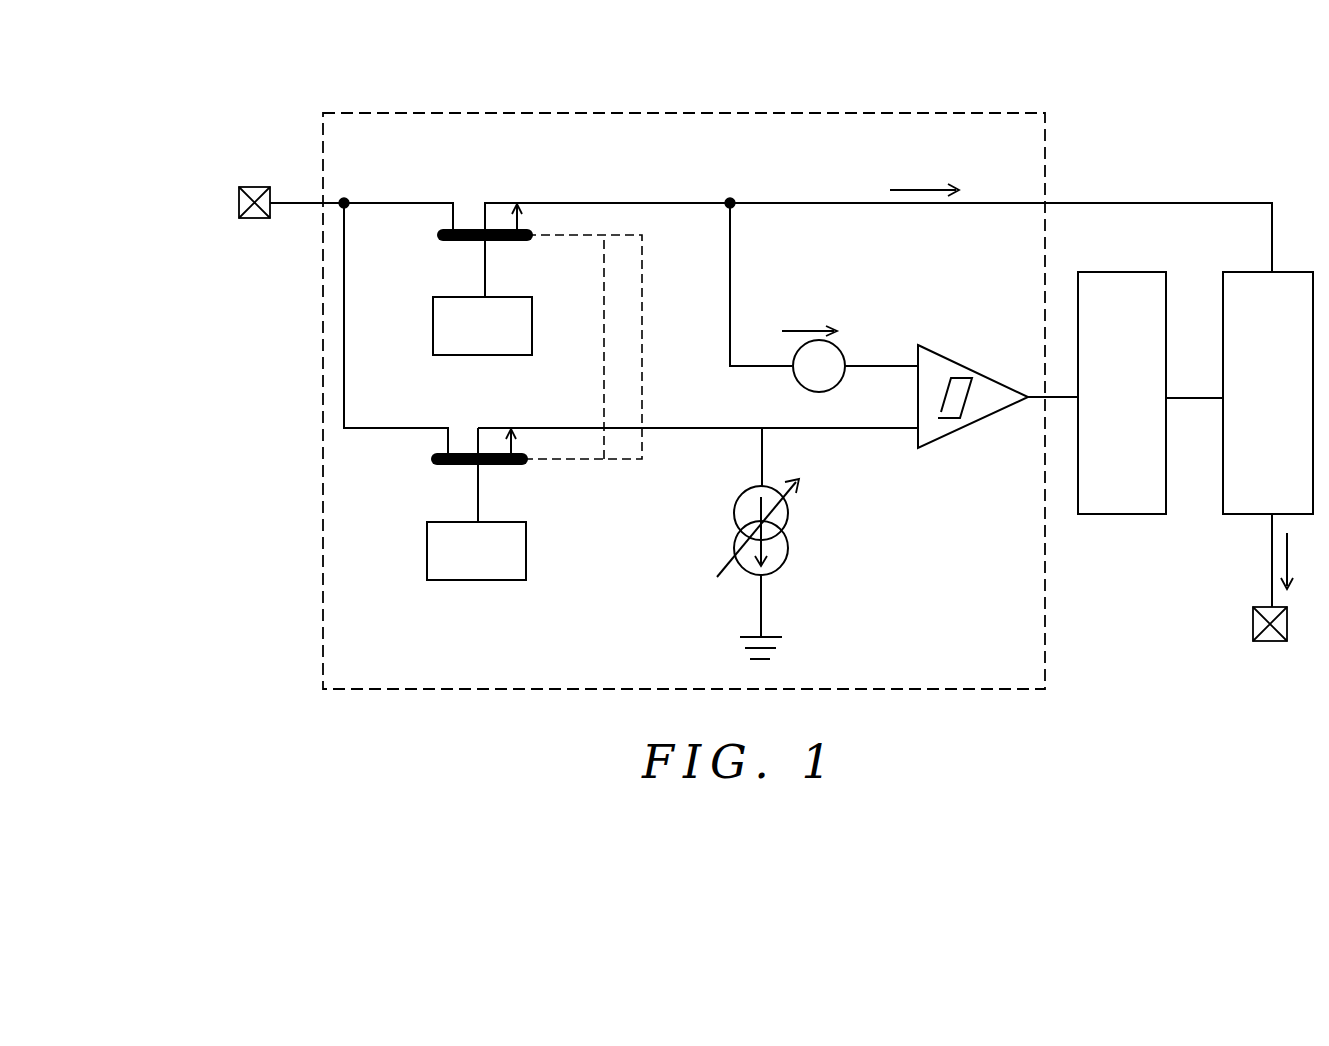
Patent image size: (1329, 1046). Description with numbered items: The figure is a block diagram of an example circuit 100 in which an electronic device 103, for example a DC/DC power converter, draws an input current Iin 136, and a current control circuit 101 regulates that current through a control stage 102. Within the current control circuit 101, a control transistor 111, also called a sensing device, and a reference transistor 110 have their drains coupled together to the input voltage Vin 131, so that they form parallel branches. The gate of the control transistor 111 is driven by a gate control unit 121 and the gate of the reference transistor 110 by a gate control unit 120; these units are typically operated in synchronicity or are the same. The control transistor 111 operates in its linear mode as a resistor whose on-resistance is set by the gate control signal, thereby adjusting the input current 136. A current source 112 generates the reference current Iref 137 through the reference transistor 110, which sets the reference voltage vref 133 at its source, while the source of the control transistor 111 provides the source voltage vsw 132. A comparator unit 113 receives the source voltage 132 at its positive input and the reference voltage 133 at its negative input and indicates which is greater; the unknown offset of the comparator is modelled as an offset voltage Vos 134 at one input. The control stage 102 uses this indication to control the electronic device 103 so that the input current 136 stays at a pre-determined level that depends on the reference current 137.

The circuit 100 is at (229, 412).
The current control circuit 101 is at (322, 628).
The control stage 102 is at (1103, 514).
The electronic device 103 is at (1256, 271).
The reference transistor M0 110 is at (443, 442).
The control transistor M1 111 is at (448, 217).
The current source 112 is at (737, 524).
The comparator unit 113 is at (957, 353).
The gate control unit 120 is at (427, 551).
The gate control unit 121 is at (433, 325).
The input voltage Vin 131 is at (255, 187).
The source voltage vsw 132 is at (784, 186).
The reference voltage vref 133 is at (824, 430).
The offset voltage Vos 134 is at (811, 308).
The input current Iin 136 is at (915, 168).
The reference current Iref 137 is at (848, 526).